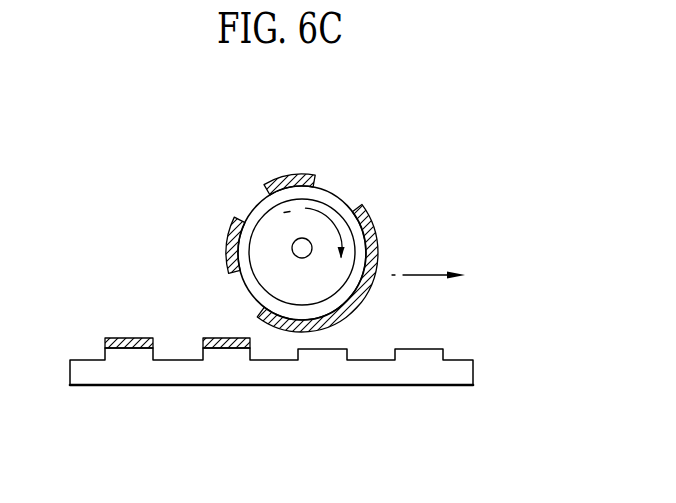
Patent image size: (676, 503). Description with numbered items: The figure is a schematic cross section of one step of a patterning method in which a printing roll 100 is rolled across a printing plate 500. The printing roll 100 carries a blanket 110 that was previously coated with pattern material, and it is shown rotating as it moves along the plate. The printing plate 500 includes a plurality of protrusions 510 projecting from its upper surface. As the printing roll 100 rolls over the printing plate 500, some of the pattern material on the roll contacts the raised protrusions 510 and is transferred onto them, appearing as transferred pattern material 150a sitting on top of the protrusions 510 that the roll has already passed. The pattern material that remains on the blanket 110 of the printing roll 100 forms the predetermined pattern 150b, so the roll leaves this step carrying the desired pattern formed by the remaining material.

The printing roll 100 is at (268, 228).
The blanket 110 is at (239, 237).
The pattern material transferred onto protrusions 150a is at (128, 344).
The predetermined pattern 150b is at (371, 212).
The printing plate 500 is at (473, 368).
The protrusions 510 is at (427, 353).